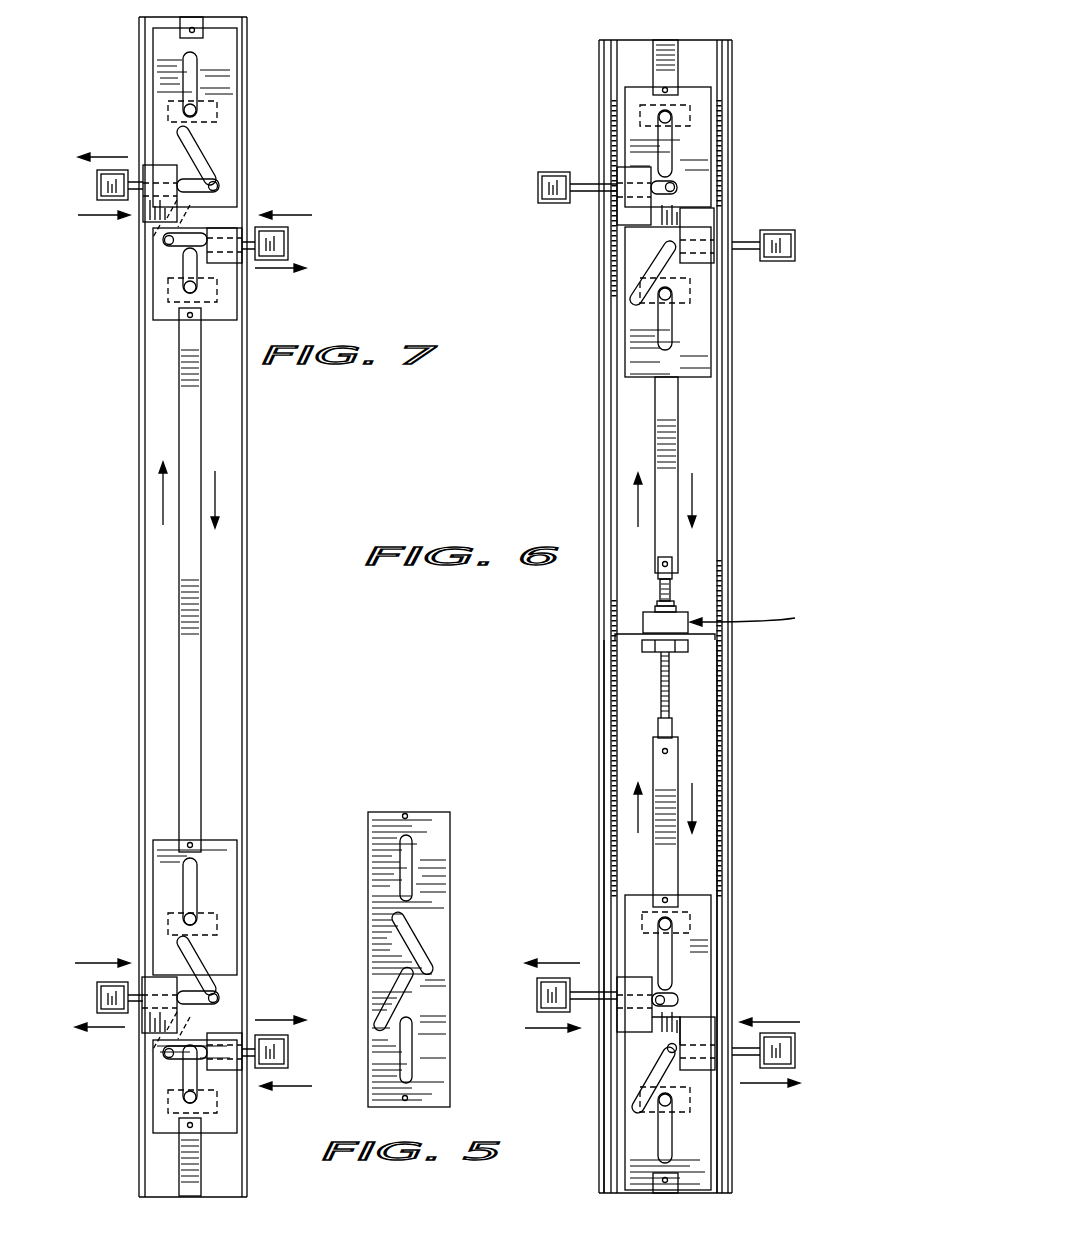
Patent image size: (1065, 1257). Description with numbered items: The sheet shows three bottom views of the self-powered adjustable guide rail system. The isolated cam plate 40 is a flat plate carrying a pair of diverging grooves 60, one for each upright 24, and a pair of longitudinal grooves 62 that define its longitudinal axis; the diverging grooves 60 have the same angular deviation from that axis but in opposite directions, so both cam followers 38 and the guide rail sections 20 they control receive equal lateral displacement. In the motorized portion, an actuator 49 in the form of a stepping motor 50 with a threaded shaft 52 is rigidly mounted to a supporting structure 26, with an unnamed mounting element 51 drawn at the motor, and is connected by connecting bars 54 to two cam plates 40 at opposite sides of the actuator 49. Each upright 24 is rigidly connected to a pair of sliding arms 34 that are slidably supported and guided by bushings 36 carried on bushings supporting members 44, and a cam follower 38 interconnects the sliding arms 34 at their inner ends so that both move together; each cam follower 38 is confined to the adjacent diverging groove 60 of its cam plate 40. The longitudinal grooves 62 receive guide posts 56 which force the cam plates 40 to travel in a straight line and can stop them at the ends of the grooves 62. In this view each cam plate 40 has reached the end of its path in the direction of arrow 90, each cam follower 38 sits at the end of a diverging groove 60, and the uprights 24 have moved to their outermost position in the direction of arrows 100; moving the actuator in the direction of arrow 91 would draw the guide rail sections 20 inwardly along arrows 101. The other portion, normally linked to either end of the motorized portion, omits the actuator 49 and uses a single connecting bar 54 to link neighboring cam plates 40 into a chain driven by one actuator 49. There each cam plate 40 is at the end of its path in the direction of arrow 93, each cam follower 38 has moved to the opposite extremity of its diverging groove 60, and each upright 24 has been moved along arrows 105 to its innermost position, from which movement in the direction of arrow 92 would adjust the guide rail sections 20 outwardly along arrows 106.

In FIG. 6, the guide rail section 20 is at (600, 410).
In FIG. 7, the upright 24 is at (100, 186).
In FIG. 6, the upright 24 is at (543, 190).
In FIG. 6, the supporting structure 26 is at (615, 680).
In FIG. 6, the sliding arm 34 is at (600, 188).
In FIG. 7, the bushing 36 is at (150, 170).
In FIG. 6, the bushing 36 is at (625, 170).
In FIG. 7, the cam follower 38 is at (218, 998).
In FIG. 6, the cam follower 38 is at (665, 1000).
In FIG. 7, the cam plate 40 is at (230, 148).
In FIG. 5, the cam plate 40 is at (435, 848).
In FIG. 6, the cam plate 40 is at (640, 328).
In FIG. 6, the bushings supporting member 44 is at (705, 1032).
In FIG. 6, the actuator 49 is at (769, 610).
In FIG. 6, the stepping motor 50 is at (680, 622).
In FIG. 6, the mounting bracket 51 is at (630, 633).
In FIG. 6, the threaded shaft 52 is at (666, 685).
In FIG. 7, the connecting bar 54 is at (198, 592).
In FIG. 6, the connecting bar 54 is at (680, 60).
In FIG. 7, the guide post 56 is at (195, 920).
In FIG. 6, the guide post 56 is at (668, 920).
In FIG. 5, the diverging groove 60 is at (402, 935).
In FIG. 5, the longitudinal groove 62 is at (398, 852).
In FIG. 6, the longitudinal groove 62 is at (648, 1040).
In FIG. 6, the arrow 90 is at (695, 492).
In FIG. 6, the arrow 91 is at (635, 500).
In FIG. 7, the arrow 92 is at (218, 490).
In FIG. 7, the arrow 93 is at (160, 490).
In FIG. 6, the arrows 100 is at (560, 963).
In FIG. 6, the arrows 101 is at (800, 1022).
In FIG. 7, the arrows 105 is at (100, 215).
In FIG. 7, the arrows 106 is at (100, 157).